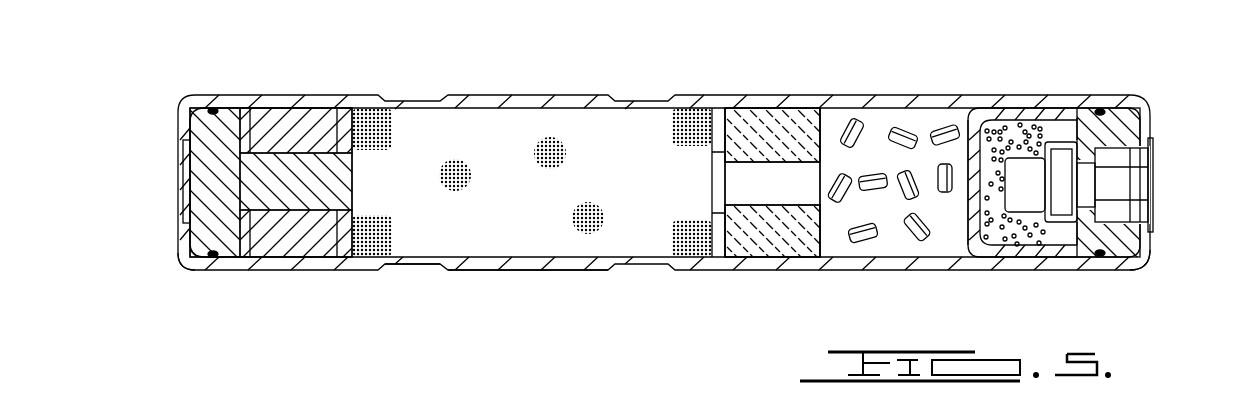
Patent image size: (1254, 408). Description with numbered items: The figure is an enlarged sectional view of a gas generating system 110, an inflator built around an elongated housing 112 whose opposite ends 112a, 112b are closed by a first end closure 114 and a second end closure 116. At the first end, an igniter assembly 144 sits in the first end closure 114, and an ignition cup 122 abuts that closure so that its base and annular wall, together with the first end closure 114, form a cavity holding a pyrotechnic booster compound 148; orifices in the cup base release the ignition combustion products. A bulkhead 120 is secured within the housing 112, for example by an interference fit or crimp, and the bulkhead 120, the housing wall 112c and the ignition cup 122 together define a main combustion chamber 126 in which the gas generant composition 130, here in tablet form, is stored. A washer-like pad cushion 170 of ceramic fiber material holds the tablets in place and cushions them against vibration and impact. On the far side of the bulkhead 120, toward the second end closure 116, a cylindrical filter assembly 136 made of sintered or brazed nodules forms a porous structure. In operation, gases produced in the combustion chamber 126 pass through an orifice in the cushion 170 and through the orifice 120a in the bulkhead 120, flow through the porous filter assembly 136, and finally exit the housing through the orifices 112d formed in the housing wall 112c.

The gas generating system 110 is at (1180, 67).
The housing 112 is at (768, 94).
The housing end 112a is at (1134, 268).
The housing end 112b is at (186, 271).
The housing wall 112c is at (490, 266).
The orifices 112d is at (414, 264).
The first end closure 114 is at (1113, 126).
The second end closure 116 is at (325, 195).
The bulkhead 120 is at (707, 96).
The orifice 120a is at (719, 192).
The ignition cup 122 is at (975, 104).
The main combustion chamber 126 is at (837, 248).
The gas generant composition 130 is at (898, 118).
The filter assembly 136 is at (383, 97).
The igniter assembly 144 is at (1142, 122).
The pyrotechnic booster compound 148 is at (1028, 242).
The pad cushion 170 is at (750, 242).